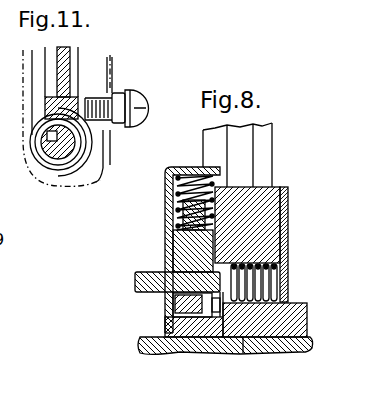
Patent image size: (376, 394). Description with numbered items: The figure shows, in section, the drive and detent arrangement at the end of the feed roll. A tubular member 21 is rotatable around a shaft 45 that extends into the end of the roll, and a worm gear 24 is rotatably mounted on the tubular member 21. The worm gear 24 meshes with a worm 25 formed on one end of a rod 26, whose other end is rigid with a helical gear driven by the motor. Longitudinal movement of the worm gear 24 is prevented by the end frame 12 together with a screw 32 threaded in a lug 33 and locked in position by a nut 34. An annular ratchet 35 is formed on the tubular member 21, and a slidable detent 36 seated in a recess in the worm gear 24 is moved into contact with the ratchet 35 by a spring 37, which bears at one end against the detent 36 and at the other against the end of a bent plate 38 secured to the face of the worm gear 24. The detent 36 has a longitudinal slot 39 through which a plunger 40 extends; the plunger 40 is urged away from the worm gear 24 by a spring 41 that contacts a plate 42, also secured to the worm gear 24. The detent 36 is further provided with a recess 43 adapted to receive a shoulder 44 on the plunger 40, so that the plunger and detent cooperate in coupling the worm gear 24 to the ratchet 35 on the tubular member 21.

In FIG. 11, the end frame 12 is at (101, 180).
In FIG. 8, the tubular member 21 is at (298, 305).
In FIG. 11, the worm gear 24 is at (67, 62).
In FIG. 8, the worm gear 24 is at (273, 190).
In FIG. 11, the worm 25 is at (76, 146).
In FIG. 11, the rod 26 is at (50, 143).
In FIG. 11, the screw 32 is at (137, 100).
In FIG. 11, the lug 33 is at (116, 58).
In FIG. 11, the nut 34 is at (119, 92).
In FIG. 8, the annular ratchet 35 is at (170, 318).
In FIG. 8, the slidable detent 36 is at (183, 251).
In FIG. 8, the spring 37 is at (170, 196).
In FIG. 8, the bent plate 38 is at (183, 167).
In FIG. 8, the longitudinal slot 39 is at (192, 300).
In FIG. 8, the plunger 40 is at (155, 293).
In FIG. 8, the spring 41 is at (277, 267).
In FIG. 8, the plate 42 is at (288, 212).
In FIG. 8, the recess 43 is at (207, 303).
In FIG. 8, the shoulder 44 is at (247, 345).
In FIG. 8, the shaft 45 is at (302, 343).